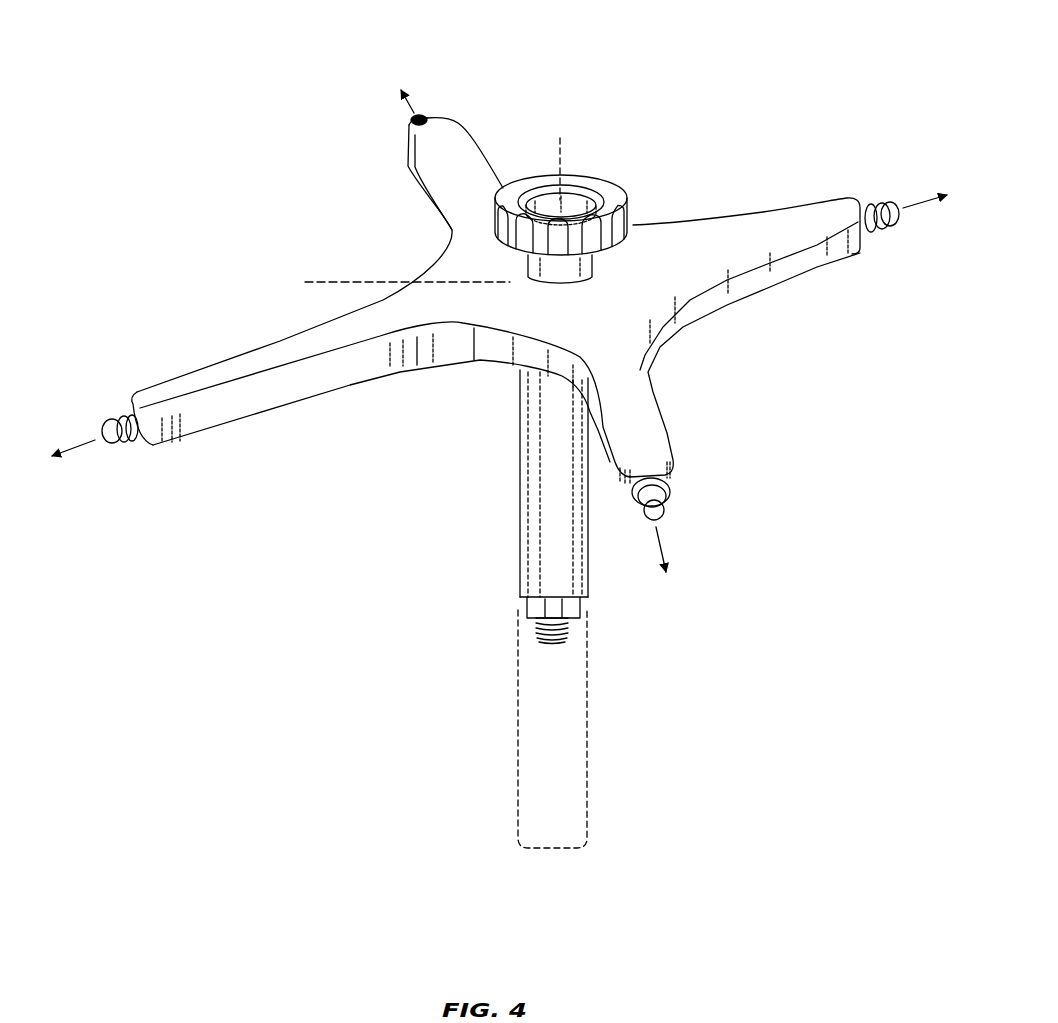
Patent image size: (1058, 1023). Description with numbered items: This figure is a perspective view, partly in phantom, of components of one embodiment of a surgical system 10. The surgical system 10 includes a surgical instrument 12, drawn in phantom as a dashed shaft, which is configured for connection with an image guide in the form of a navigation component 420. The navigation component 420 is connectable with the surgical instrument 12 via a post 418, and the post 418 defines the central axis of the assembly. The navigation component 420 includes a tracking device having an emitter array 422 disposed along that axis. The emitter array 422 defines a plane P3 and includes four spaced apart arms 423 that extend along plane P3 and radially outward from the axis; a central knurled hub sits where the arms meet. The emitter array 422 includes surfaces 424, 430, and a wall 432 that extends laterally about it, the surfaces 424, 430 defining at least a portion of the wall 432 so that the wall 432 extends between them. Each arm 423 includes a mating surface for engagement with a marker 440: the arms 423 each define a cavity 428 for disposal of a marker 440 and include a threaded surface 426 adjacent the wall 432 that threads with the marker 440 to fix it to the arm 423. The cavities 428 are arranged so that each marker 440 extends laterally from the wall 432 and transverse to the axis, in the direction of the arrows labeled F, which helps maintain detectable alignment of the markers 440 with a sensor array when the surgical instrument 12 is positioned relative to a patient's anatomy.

The surgical system 10 is at (242, 77).
The surgical instrument 12 is at (483, 741).
The post 418 is at (518, 546).
The navigation component 420 is at (840, 151).
The emitter array 422 is at (842, 341).
The arms 423 is at (503, 185).
The surface 424 is at (693, 243).
The threaded surface 426 is at (670, 486).
The cavity 428 is at (666, 500).
The surface 430 is at (347, 395).
The wall 432 is at (712, 284).
The markers 440 is at (411, 120).
The plane P3 is at (394, 283).